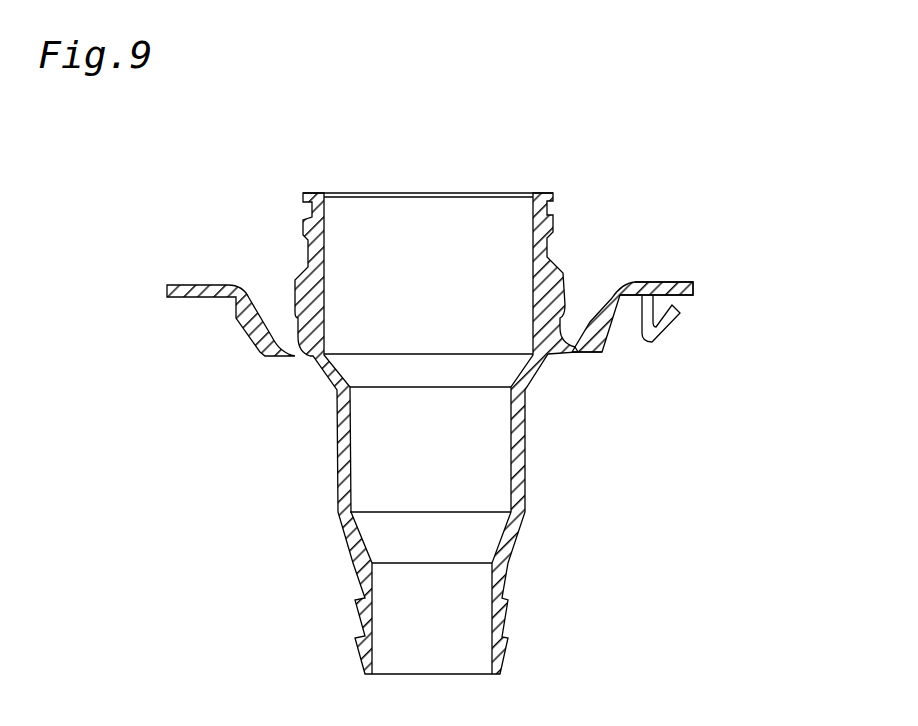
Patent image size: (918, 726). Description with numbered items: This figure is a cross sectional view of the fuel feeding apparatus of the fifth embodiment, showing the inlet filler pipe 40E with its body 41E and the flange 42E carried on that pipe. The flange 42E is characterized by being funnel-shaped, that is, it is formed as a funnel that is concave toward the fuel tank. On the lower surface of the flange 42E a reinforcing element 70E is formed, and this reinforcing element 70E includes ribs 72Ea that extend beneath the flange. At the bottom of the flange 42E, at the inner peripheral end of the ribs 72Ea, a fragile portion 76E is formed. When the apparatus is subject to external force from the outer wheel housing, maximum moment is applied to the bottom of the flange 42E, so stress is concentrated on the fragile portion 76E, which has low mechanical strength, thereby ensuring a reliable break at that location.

The inlet filler pipe 40E is at (663, 218).
The pipe body 41E is at (546, 253).
The flange 42E is at (670, 283).
The reinforcing element 70E is at (470, 349).
The ribs 72Ea is at (613, 330).
The fragile portion 76E is at (583, 352).